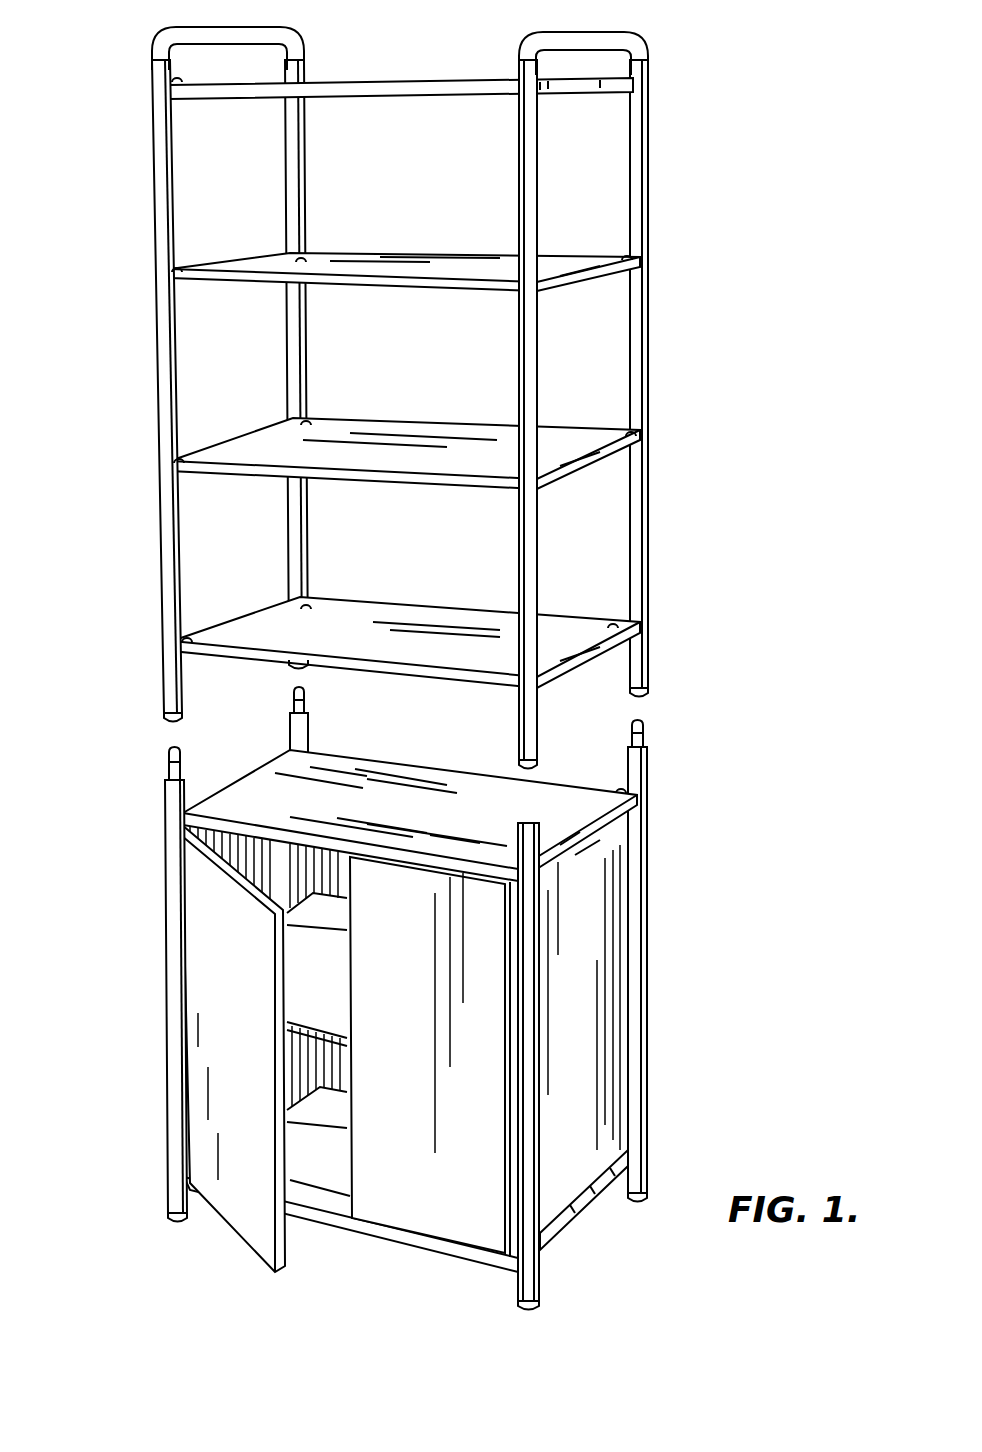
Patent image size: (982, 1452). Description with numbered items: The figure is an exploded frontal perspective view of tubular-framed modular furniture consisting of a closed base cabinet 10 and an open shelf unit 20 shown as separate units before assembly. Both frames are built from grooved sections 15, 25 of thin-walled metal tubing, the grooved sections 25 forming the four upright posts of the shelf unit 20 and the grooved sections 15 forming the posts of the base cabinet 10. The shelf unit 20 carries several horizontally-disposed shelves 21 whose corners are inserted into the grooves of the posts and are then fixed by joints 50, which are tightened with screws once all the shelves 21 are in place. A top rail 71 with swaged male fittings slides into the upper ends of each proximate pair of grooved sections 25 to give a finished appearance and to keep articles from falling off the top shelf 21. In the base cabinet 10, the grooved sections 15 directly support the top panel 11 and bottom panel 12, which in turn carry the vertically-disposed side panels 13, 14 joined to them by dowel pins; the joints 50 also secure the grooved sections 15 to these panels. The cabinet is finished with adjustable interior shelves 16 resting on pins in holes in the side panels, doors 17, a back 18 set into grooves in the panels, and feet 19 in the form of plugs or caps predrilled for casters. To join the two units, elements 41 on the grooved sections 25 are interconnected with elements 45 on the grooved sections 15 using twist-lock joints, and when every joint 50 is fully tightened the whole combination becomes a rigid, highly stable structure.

The base cabinet 10 is at (439, 1013).
The top panel 11 is at (590, 822).
The bottom panel 12 is at (330, 1183).
The side panel 13 is at (580, 1010).
The side panel 14 is at (260, 850).
The grooved section 15 is at (409, 1013).
The adjustable interior shelf 16 is at (340, 997).
The door 17 is at (262, 1235).
The back 18 is at (343, 1080).
The foot 19 is at (172, 1220).
The open shelf unit 20 is at (422, 408).
The shelf 21 is at (463, 80).
The grooved section 25 is at (405, 398).
The interconnecting element 41 is at (650, 690).
The interconnecting element 45 is at (680, 728).
The joint 50 is at (178, 78).
The top rail 71 is at (263, 32).